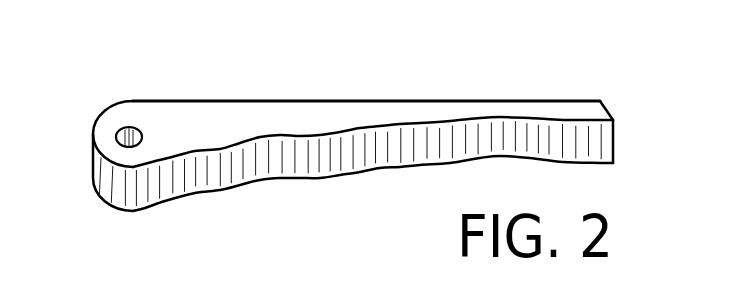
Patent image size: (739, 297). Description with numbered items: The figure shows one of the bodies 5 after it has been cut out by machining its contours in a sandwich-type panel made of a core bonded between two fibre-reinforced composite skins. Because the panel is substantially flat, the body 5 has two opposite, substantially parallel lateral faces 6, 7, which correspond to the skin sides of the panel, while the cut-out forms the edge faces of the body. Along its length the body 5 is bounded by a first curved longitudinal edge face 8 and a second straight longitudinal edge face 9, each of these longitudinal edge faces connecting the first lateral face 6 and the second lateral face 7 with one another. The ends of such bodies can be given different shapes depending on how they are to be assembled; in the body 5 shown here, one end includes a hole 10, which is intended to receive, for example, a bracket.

The body 5 is at (640, 120).
The first lateral face 6 is at (437, 110).
The second lateral face 7 is at (393, 166).
The first curved longitudinal edge face 8 is at (200, 172).
The second straight longitudinal edge face 9 is at (190, 100).
The hole 10 is at (122, 126).